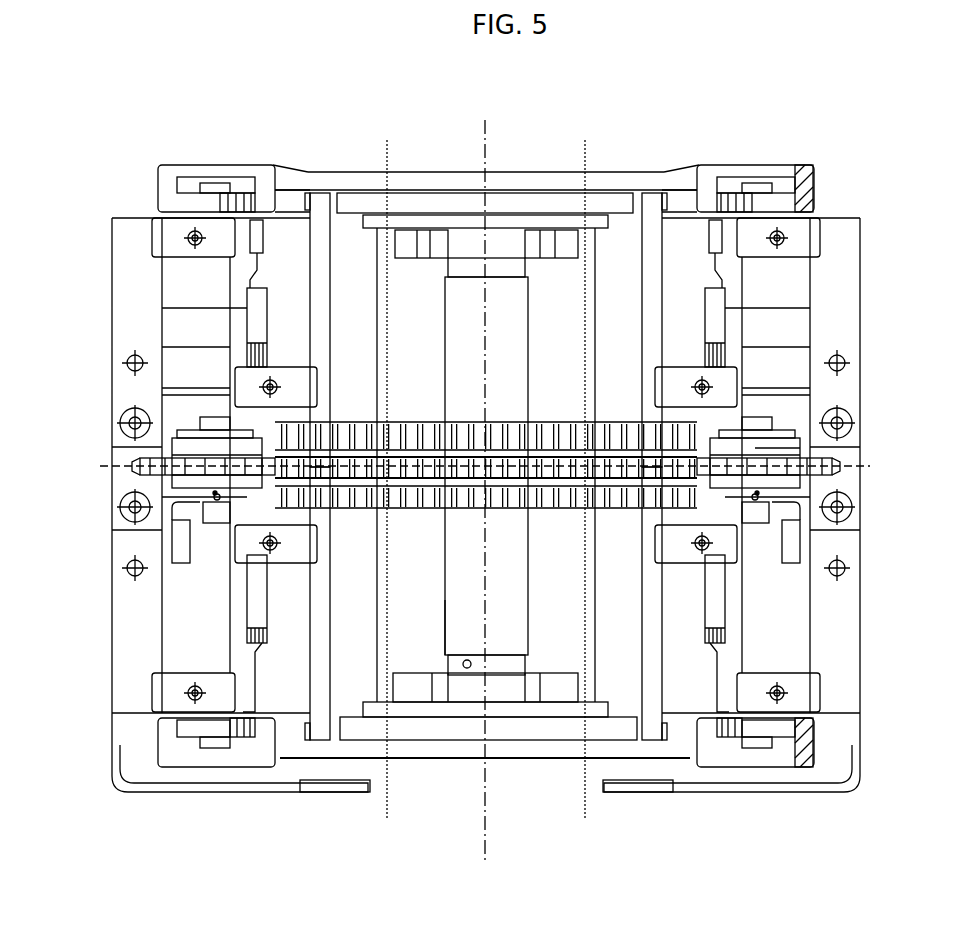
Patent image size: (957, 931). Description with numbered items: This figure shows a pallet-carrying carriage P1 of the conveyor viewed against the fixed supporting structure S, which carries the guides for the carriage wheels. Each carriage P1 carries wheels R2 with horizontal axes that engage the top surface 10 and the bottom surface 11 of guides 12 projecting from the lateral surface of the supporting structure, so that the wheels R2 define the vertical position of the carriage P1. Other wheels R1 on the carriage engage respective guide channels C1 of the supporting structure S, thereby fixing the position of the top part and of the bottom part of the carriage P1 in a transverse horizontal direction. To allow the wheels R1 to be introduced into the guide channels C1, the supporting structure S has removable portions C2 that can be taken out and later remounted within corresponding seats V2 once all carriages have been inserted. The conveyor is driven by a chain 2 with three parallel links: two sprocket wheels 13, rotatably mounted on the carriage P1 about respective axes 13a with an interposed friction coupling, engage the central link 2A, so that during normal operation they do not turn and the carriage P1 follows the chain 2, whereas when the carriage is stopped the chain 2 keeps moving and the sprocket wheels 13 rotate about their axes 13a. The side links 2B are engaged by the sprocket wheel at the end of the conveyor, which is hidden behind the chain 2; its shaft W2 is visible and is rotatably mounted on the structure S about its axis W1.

The pallet-carrying carriage P1 is at (98, 268).
The supporting structure S is at (628, 168).
The guide channel C1 is at (190, 183).
The wheel R1 is at (197, 207).
The seat V2 is at (815, 178).
The removable portion C2 is at (817, 190).
The wheel R2 is at (257, 320).
The top surface 10 is at (283, 365).
The bottom surface 11 is at (311, 603).
The guide 12 is at (304, 388).
The chain 2 is at (409, 402).
The side link 2B is at (566, 420).
The central link 2A is at (515, 512).
The sprocket wheel 13 is at (140, 466).
The axis 13a is at (800, 448).
The shaft W2 is at (463, 630).
The axis W1 is at (488, 785).